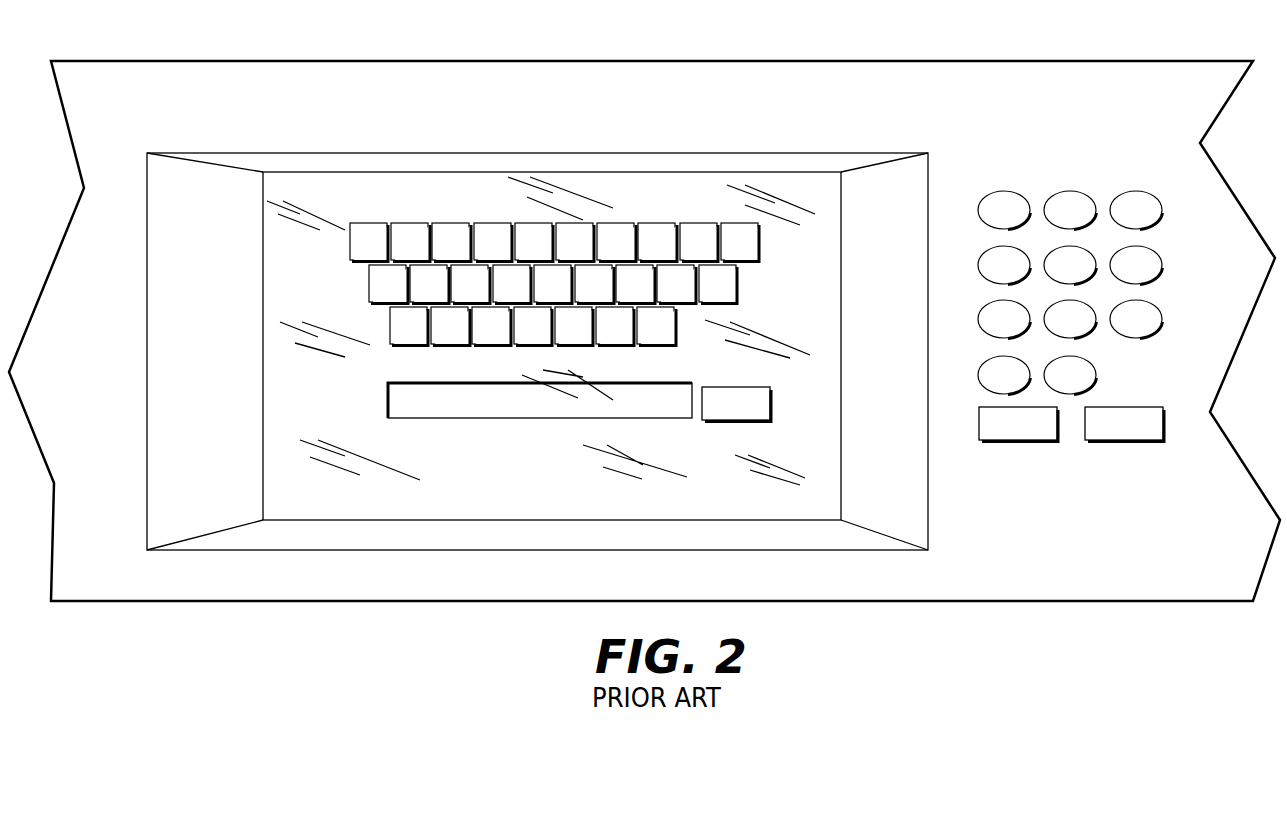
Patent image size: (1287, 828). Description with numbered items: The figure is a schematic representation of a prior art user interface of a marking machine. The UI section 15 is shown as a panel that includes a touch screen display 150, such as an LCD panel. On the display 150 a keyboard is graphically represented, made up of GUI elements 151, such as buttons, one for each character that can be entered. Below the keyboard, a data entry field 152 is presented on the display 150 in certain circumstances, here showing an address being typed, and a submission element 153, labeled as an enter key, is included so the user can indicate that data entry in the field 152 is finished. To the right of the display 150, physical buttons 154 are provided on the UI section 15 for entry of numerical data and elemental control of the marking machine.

The UI section 15 is at (926, 44).
The touch screen display 150 is at (608, 152).
The GUI elements 151 is at (446, 224).
The data entry fields 152 is at (527, 412).
The submission element 153 is at (771, 404).
The physical buttons 154 is at (1127, 190).